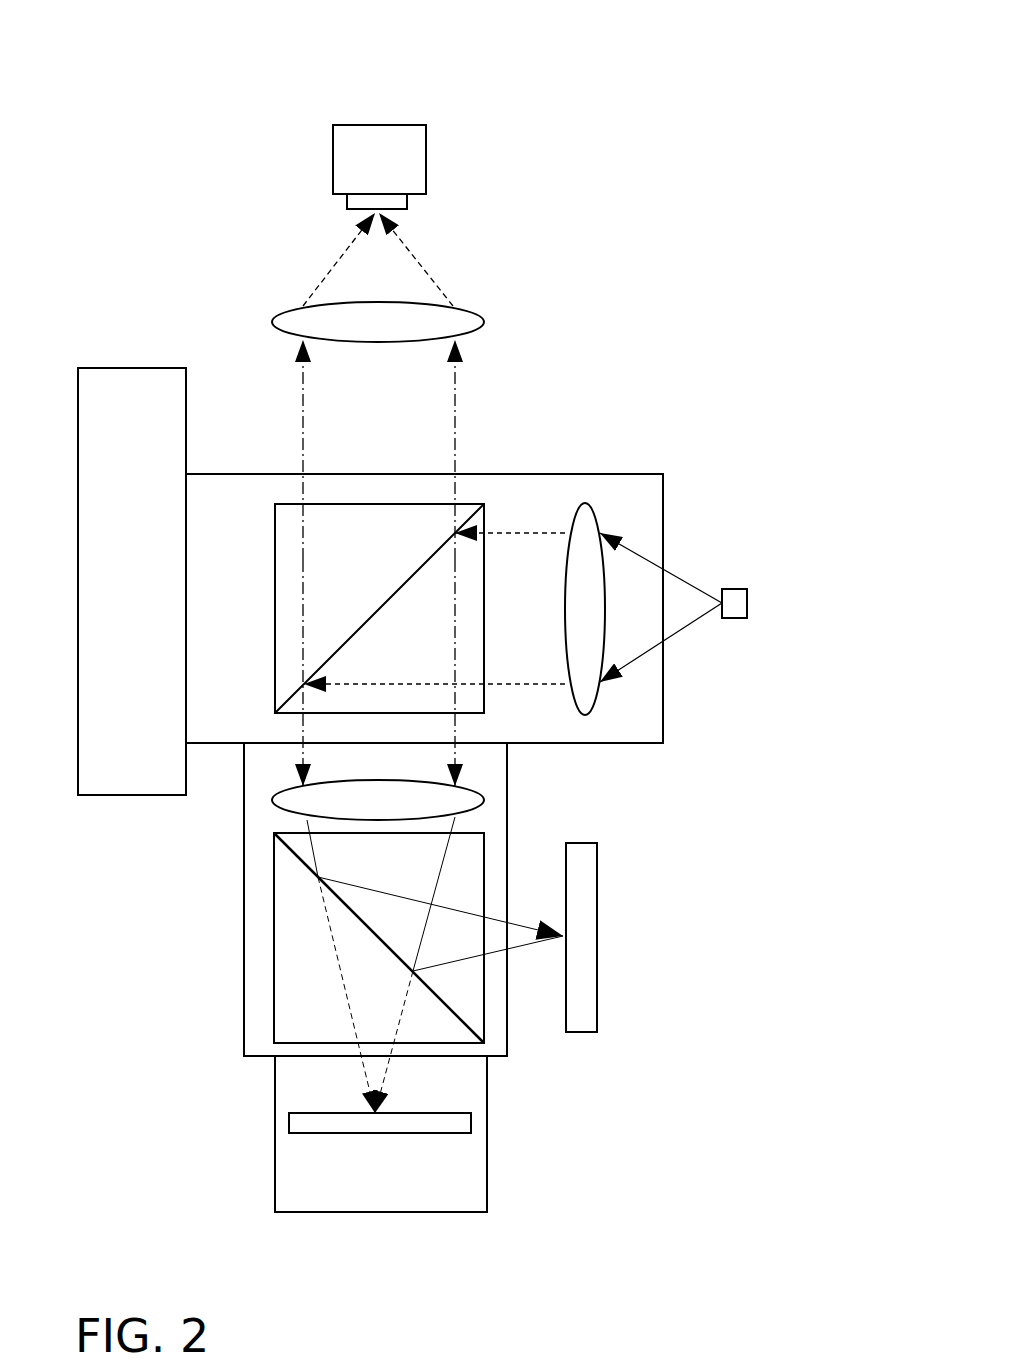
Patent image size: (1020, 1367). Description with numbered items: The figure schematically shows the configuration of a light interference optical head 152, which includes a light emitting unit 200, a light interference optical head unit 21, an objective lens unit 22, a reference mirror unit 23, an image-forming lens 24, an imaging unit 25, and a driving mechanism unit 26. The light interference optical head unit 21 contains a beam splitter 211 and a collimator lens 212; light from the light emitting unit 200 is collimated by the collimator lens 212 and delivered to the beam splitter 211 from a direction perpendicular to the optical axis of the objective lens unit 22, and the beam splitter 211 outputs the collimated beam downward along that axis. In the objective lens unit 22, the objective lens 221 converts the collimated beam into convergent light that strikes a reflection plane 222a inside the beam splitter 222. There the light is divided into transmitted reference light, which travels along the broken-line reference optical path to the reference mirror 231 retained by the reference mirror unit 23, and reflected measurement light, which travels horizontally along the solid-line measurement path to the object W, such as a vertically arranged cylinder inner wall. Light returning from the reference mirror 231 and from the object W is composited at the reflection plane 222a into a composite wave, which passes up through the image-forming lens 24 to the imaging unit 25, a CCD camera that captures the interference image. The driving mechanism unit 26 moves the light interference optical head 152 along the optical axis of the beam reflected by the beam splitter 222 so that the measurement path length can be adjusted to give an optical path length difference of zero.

The light interference optical head 152 is at (500, 103).
The imaging unit 25 is at (360, 137).
The image-forming lens 24 is at (466, 320).
The driving mechanism unit 26 is at (128, 385).
The light interference optical head unit 21 is at (643, 474).
The beam splitter 211 is at (287, 505).
The collimator lens 212 is at (585, 516).
The light emitting unit 200 is at (733, 596).
The objective lens unit 22 is at (244, 893).
The objective lens 221 is at (280, 793).
The beam splitter 222 is at (334, 965).
The reflection plane 222a is at (307, 867).
The object W is at (585, 940).
The reference mirror unit 23 is at (405, 1215).
The reference mirror 231 is at (455, 1122).